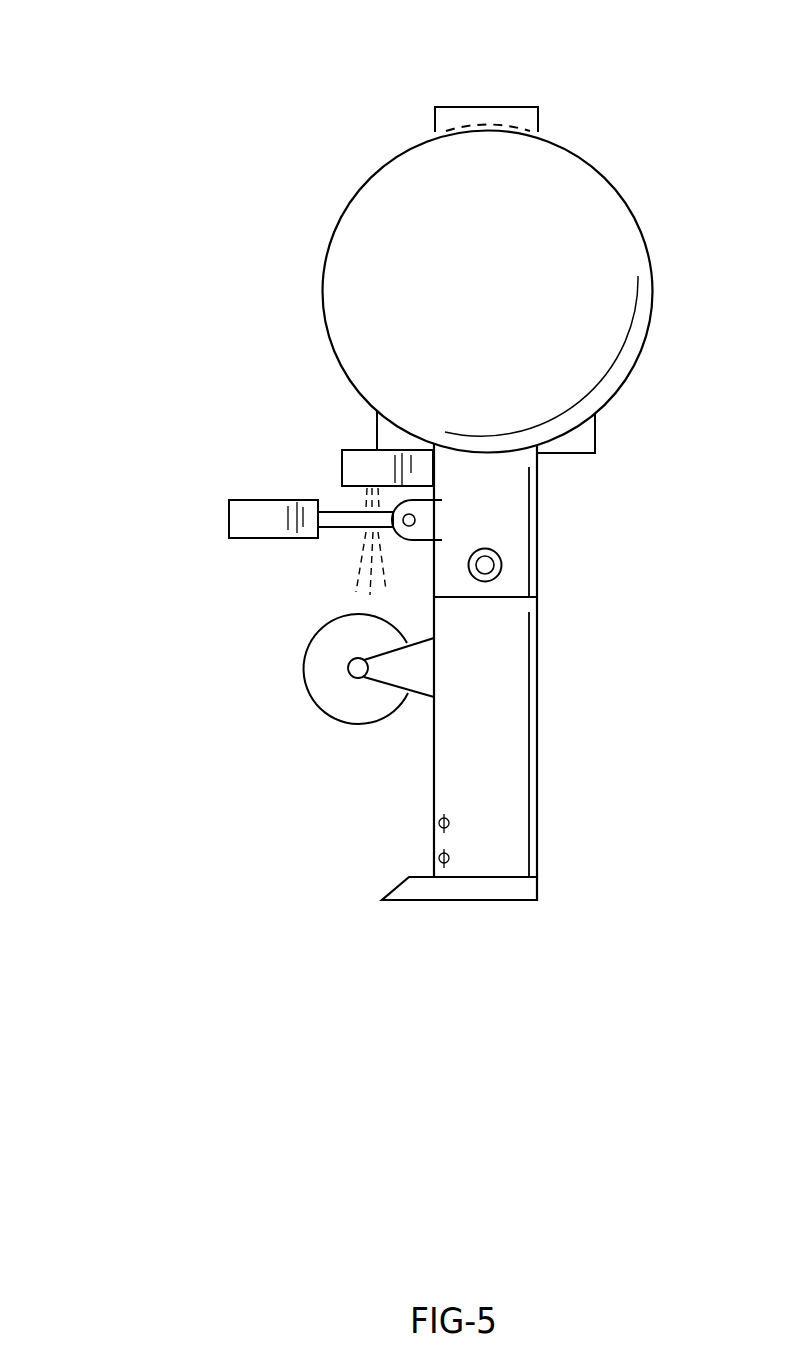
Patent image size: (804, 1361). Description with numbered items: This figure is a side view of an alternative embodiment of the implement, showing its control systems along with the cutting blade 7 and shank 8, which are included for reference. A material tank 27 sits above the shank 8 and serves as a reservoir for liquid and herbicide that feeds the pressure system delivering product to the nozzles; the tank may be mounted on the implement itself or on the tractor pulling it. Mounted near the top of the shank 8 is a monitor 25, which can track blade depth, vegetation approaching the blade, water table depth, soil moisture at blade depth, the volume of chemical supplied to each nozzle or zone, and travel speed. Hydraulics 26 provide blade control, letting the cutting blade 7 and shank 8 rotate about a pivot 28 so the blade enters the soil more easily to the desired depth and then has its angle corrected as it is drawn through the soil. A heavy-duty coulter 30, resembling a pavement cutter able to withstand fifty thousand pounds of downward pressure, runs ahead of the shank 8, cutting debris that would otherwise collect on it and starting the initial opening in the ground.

The material tank 27 is at (547, 208).
The monitor 25 is at (365, 462).
The hydraulics 26 is at (255, 515).
The pivot 28 is at (502, 548).
The heavy-duty coulter 30 is at (330, 678).
The shank 8 is at (455, 747).
The cutting blade 7 is at (508, 887).